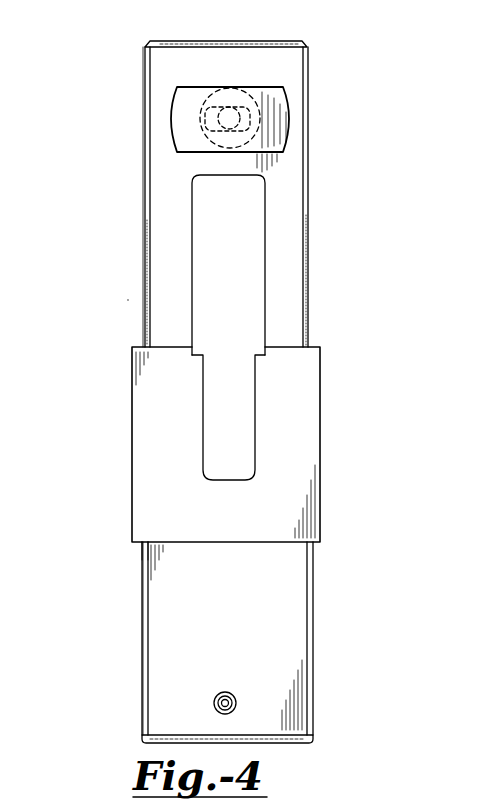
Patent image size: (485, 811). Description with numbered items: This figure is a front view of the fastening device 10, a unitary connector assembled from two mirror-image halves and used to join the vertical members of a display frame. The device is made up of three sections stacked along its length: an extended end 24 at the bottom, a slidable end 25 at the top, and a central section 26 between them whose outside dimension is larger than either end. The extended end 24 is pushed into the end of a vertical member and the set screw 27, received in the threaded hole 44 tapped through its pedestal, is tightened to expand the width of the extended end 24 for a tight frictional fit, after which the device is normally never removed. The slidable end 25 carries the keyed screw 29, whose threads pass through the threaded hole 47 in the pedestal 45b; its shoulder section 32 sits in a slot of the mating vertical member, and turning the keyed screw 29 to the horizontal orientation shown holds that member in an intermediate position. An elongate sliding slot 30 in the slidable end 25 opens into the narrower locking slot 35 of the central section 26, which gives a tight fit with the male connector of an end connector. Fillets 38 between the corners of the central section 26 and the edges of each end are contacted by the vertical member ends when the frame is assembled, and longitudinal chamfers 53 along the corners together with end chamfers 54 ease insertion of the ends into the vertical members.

The fastening device 10 is at (126, 298).
The extended end 24 is at (316, 647).
The slidable end 25 is at (311, 225).
The central section 26 is at (322, 436).
The set screw 27 is at (225, 692).
The keyed screw 29 is at (257, 85).
The elongate sliding slot 30 is at (243, 284).
The shoulder section 32 is at (248, 108).
The locking slot 35 is at (237, 434).
The fillets 38 is at (278, 546).
The threaded hole 44 is at (214, 703).
The pedestal 45b is at (203, 100).
The threaded hole 47 is at (258, 131).
The longitudinal chamfers 53 is at (145, 205).
The end chamfers 54 is at (220, 40).